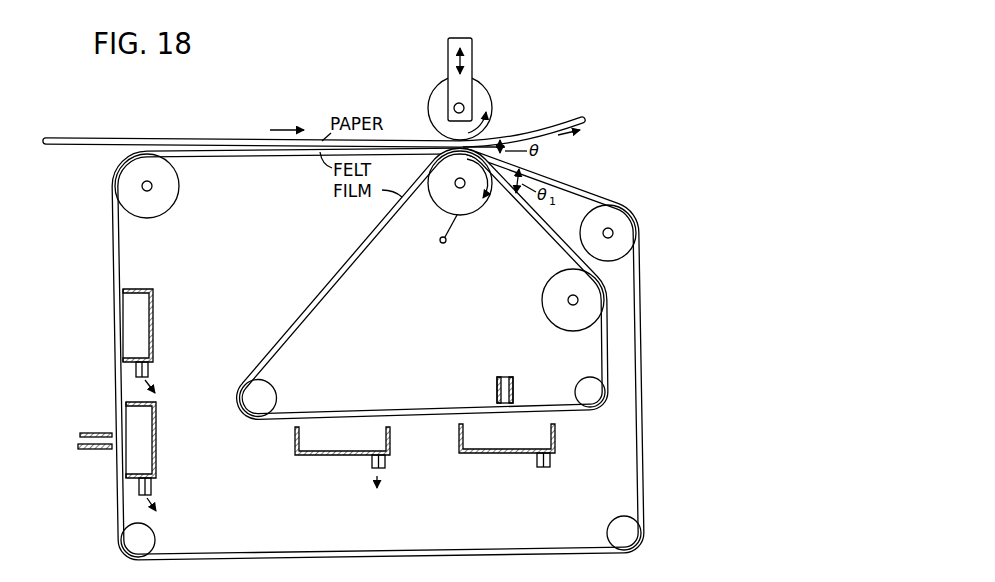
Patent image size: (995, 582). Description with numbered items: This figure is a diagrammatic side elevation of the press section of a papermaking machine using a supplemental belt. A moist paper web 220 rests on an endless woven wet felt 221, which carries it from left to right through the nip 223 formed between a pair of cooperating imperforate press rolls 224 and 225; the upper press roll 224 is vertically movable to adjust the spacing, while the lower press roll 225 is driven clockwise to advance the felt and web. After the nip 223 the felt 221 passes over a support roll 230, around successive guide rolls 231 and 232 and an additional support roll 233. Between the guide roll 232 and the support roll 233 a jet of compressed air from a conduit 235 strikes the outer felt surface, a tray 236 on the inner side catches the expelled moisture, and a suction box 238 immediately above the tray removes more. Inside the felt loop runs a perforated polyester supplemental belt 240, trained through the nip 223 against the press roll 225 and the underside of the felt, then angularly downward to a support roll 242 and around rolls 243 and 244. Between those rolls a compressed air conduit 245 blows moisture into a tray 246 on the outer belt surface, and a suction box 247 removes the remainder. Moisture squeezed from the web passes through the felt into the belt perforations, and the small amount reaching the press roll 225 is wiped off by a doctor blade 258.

The moist paper web 220 is at (78, 116).
The wet felt 221 is at (110, 240).
The nip 223 is at (440, 137).
The press roll 224 is at (478, 83).
The press roll 225 is at (436, 206).
The support roll 230 is at (632, 238).
The guide roll 231 is at (638, 533).
The guide roll 232 is at (127, 547).
The support roll 233 is at (149, 218).
The conduit 235 is at (86, 432).
The tray 236 is at (156, 447).
The suction box 238 is at (153, 319).
The supplemental belt 240 is at (361, 252).
The support roll 242 is at (541, 302).
The guide roll 243 is at (579, 383).
The roll 244 is at (268, 386).
The compressed air conduit 245 is at (495, 389).
The tray 246 is at (489, 453).
The suction box 247 is at (316, 454).
The doctor blade 258 is at (465, 235).